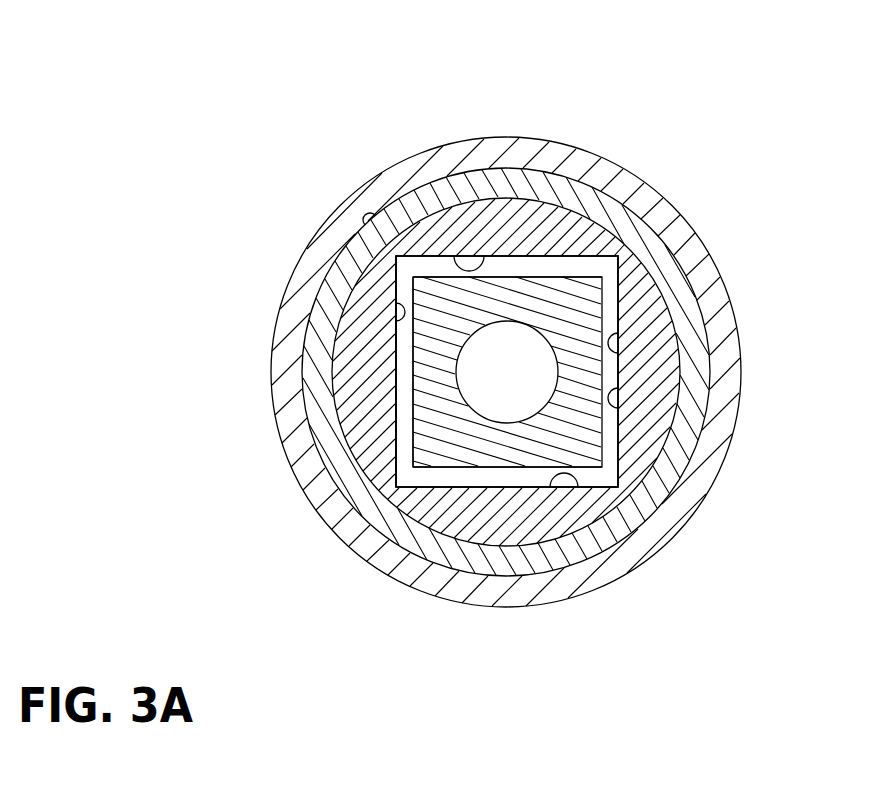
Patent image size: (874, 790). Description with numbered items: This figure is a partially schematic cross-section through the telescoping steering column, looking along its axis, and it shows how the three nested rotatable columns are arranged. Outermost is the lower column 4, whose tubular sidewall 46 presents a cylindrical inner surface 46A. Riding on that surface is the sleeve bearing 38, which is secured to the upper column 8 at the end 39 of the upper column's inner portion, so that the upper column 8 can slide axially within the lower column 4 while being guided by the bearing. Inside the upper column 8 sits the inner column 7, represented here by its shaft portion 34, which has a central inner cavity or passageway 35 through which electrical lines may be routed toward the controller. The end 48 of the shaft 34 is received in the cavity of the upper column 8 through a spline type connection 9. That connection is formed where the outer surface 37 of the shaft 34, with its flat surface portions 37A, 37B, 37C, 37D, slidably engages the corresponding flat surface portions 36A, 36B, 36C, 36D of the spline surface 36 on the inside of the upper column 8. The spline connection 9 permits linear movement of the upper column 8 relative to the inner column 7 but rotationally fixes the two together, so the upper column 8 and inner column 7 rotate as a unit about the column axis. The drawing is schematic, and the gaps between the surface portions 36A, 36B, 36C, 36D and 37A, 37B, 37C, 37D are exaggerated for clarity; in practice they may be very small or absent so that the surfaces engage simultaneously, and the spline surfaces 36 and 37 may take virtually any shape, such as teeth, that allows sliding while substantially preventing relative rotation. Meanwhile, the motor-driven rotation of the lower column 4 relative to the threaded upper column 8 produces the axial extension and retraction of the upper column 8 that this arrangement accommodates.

The lower column 4 is at (483, 120).
The inner column 7 is at (510, 258).
The upper column 8 is at (594, 201).
The spline type connection 9 is at (631, 285).
The shaft portion 34 is at (412, 366).
The inner cavity or passageway 35 is at (494, 393).
The spline surface 36 is at (612, 352).
The flat surface portion 36A is at (617, 403).
The flat surface portion 36B is at (573, 487).
The flat surface portion 36C is at (397, 311).
The flat surface portion 36D is at (450, 257).
The outer surface 37 is at (601, 332).
The flat surface portion 37A is at (601, 363).
The flat surface portion 37B is at (507, 468).
The flat surface portion 37C is at (412, 387).
The flat surface portion 37D is at (533, 277).
The sleeve bearing 38 is at (525, 185).
The end 39 is at (600, 230).
The tubular sidewall 46 is at (430, 147).
The cylindrical inner surface 46A is at (366, 224).
The end 48 is at (433, 412).